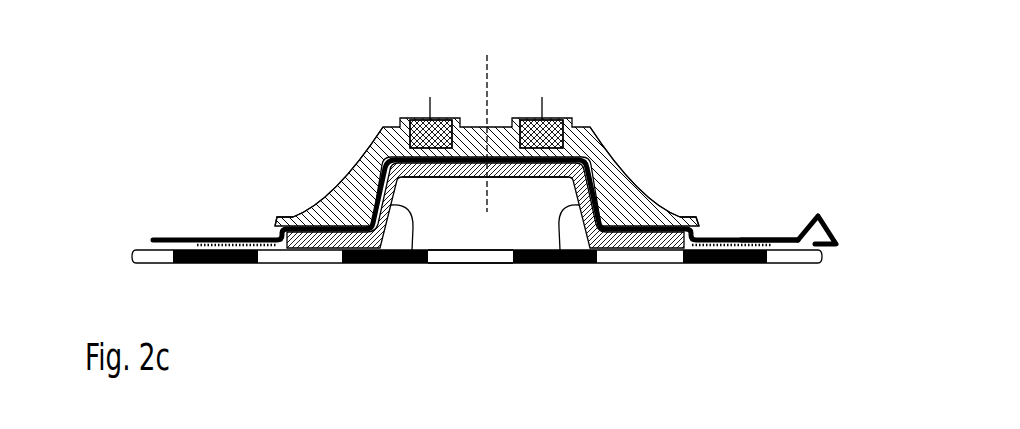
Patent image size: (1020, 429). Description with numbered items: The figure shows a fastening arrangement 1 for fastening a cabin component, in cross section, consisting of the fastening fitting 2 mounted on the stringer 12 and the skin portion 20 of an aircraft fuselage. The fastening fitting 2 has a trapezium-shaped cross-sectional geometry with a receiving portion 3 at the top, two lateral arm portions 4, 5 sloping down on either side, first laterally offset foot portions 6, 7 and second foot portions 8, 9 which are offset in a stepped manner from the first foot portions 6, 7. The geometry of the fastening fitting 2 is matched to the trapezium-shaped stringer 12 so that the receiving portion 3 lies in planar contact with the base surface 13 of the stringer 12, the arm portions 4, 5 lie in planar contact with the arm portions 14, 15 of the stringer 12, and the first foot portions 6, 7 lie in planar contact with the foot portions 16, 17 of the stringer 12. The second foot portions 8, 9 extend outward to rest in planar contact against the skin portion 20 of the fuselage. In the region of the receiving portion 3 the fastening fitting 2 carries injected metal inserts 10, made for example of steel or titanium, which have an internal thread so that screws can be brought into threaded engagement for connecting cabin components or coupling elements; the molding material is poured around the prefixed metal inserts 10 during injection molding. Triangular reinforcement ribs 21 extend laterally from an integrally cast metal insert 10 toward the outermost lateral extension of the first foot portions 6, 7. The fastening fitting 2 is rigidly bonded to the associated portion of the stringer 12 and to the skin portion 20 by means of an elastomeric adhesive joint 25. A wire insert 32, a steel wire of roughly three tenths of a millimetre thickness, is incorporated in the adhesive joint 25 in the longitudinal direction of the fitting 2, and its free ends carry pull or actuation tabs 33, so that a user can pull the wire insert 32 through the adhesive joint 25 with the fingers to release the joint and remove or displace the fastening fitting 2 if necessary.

The fastening arrangement 1 is at (667, 193).
The fastening fitting 2 is at (605, 134).
The receiving portion 3 is at (495, 127).
The lateral arm portion 4 is at (600, 178).
The lateral arm portion 5 is at (342, 200).
The first foot portion 6 is at (687, 216).
The first foot portion 7 is at (292, 218).
The second foot portion 8 is at (733, 237).
The second foot portion 9 is at (237, 233).
The metal insert 10 is at (433, 117).
The stringer 12 is at (303, 252).
The base surface 13 is at (498, 180).
The arm portion 14 is at (565, 264).
The arm portion 15 is at (404, 264).
The foot portion 16 is at (655, 265).
The foot portion 17 is at (328, 255).
The skin portion 20 is at (480, 257).
The reinforcement rib 21 is at (363, 167).
The elastomeric adhesive joint 25 is at (360, 265).
The wire insert 32 is at (766, 240).
The pull or actuation tab 33 is at (835, 223).